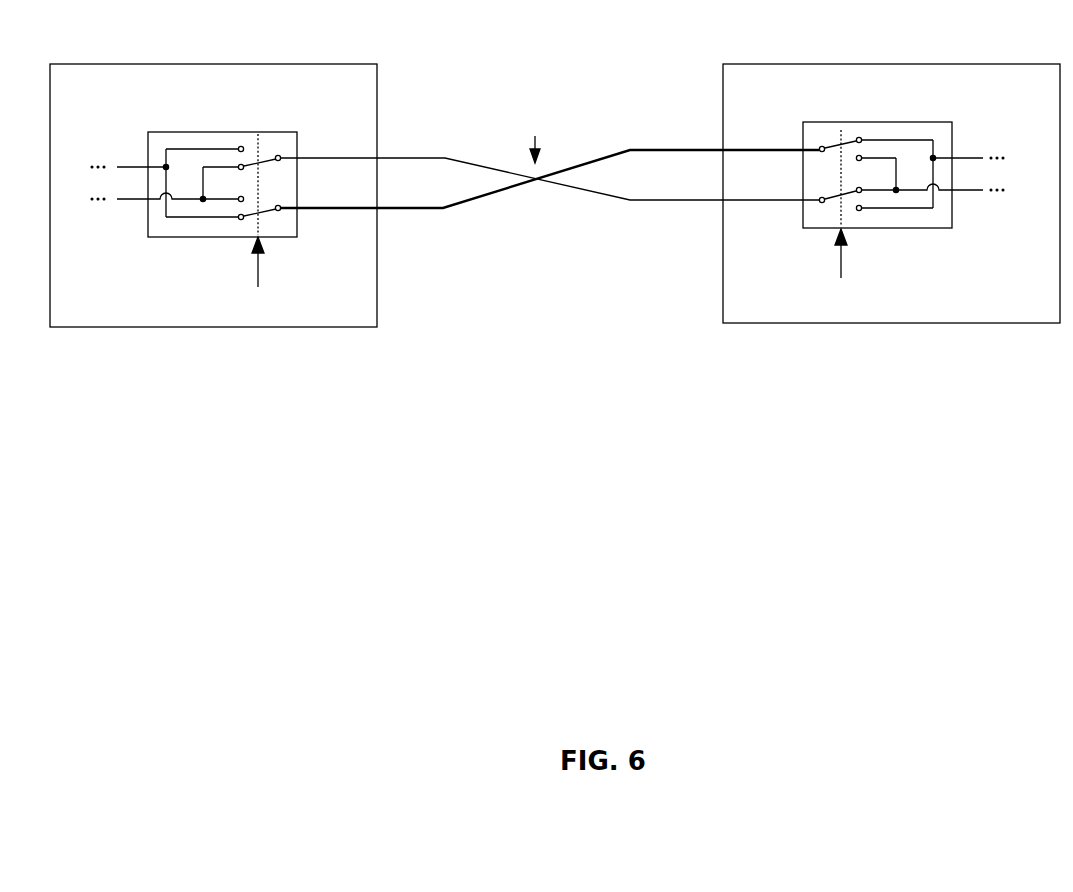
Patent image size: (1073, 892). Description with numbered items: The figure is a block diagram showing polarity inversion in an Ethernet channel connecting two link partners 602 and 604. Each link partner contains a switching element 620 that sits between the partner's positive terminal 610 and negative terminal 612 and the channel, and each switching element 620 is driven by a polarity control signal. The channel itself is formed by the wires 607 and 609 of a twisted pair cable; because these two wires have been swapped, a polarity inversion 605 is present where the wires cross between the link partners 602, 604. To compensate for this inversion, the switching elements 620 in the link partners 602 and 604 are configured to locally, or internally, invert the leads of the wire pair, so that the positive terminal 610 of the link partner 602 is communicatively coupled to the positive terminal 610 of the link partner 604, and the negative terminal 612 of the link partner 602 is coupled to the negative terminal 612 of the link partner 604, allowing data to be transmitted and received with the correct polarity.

The link partner 602 is at (96, 64).
The link partner 604 is at (780, 64).
The switching element 620 is at (167, 132).
The positive terminal 610 is at (118, 167).
The negative terminal 612 is at (118, 199).
The wire 607 is at (445, 157).
The wire 609 is at (445, 208).
The polarity inversion 605 is at (535, 138).